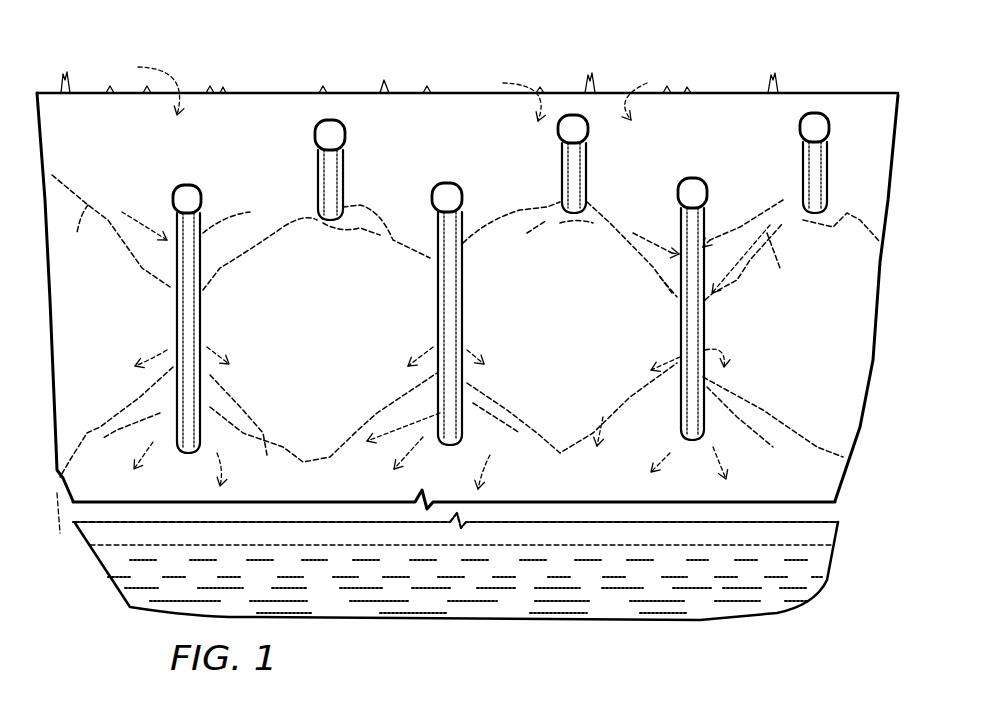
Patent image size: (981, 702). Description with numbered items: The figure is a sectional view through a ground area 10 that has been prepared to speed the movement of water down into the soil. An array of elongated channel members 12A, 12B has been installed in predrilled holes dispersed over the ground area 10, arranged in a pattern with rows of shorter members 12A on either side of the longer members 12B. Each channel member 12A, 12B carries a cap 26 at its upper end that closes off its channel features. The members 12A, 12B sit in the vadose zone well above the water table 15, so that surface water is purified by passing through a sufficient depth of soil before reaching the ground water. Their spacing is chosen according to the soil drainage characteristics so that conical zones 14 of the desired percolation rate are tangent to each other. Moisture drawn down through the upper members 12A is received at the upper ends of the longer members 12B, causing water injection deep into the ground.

The ground area 10 is at (385, 85).
The shorter channel member 12A is at (316, 172).
The longer channel member 12B is at (173, 318).
The conical zone 14 is at (437, 262).
The water table 15 is at (500, 543).
The cap 26 is at (190, 184).